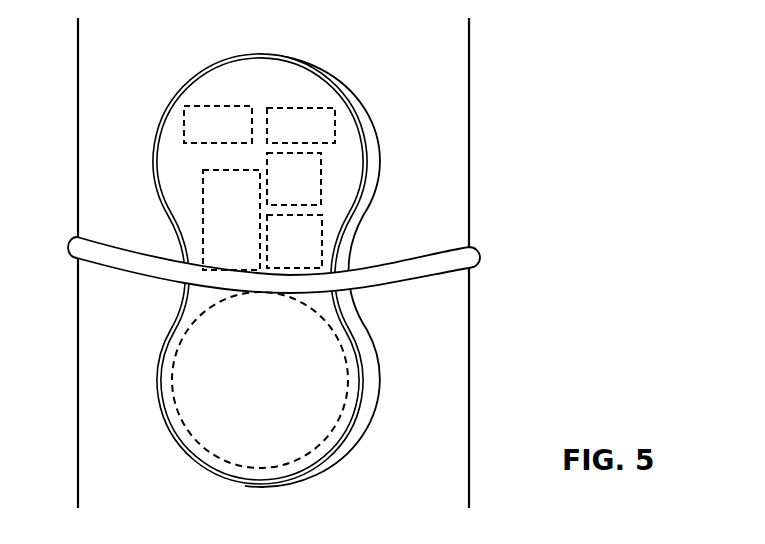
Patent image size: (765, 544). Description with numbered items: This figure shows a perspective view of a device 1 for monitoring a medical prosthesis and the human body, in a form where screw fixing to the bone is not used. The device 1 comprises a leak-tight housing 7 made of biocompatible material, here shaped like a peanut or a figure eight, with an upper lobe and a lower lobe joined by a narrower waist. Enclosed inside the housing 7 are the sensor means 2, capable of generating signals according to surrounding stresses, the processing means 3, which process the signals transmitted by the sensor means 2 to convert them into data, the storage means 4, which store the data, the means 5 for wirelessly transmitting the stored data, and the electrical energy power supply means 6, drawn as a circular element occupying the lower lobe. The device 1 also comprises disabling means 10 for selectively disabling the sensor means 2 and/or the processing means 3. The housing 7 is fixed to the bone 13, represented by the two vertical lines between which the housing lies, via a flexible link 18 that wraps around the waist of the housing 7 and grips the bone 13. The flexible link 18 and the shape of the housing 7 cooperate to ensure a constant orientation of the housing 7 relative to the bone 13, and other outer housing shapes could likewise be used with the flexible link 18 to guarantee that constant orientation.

The device for monitoring a medical prosthesis and the human body 1 is at (122, 225).
The sensor means 2 is at (323, 127).
The processing means 3 is at (228, 134).
The storage means 4 is at (237, 229).
The means for wirelessly transmitting the stored data 5 is at (299, 251).
The electrical energy power supply means 6 is at (260, 391).
The leak-tight housing 7 is at (140, 143).
The disabling means 10 is at (306, 189).
The bone 13 is at (428, 369).
The flexible link 18 is at (413, 261).